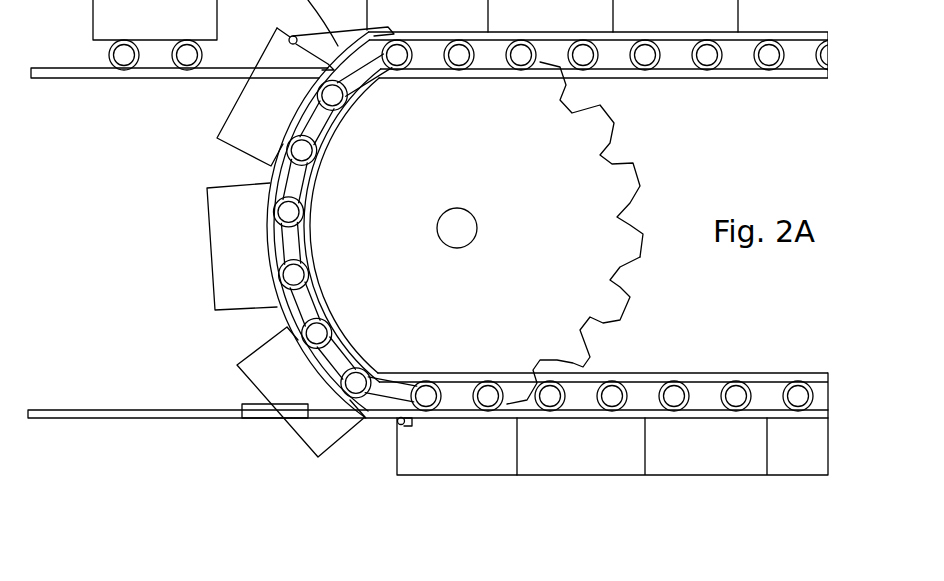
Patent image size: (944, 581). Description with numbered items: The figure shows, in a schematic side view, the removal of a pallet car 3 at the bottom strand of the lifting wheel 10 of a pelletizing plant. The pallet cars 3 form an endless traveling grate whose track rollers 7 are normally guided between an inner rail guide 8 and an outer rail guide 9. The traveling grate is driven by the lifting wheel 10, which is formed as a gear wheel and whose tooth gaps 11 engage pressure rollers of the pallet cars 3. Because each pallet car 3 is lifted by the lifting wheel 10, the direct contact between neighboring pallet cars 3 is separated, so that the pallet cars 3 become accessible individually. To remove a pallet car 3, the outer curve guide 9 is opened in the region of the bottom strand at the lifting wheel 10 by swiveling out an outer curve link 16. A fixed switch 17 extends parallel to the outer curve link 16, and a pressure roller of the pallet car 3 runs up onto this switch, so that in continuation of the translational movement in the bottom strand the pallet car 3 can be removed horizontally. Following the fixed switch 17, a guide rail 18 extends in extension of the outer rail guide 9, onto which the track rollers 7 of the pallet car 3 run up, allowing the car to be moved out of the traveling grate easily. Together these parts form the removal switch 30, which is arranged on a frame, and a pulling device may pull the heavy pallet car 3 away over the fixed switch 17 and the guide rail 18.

The pallet car 3 is at (475, 462).
The track roller 7 is at (690, 382).
The inner rail guide 8 is at (770, 372).
The outer rail guide 9 is at (708, 412).
The lifting wheel 10 is at (608, 185).
The tooth gaps 11 is at (620, 273).
The outer curve link 16 is at (370, 420).
The fixed switch 17 is at (247, 403).
The guide rail 18 is at (138, 410).
The removal switch 30 is at (285, 464).